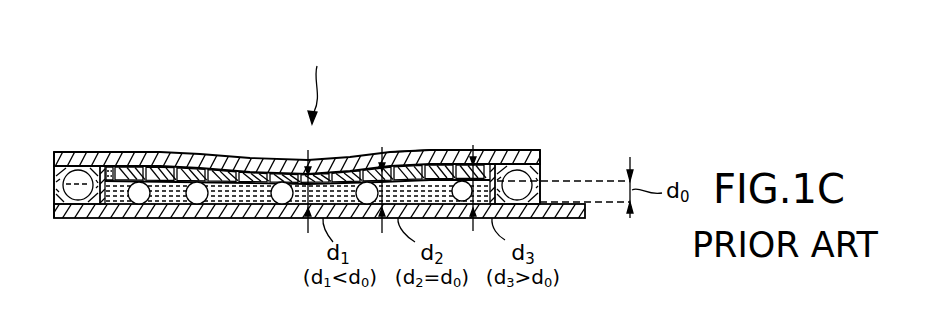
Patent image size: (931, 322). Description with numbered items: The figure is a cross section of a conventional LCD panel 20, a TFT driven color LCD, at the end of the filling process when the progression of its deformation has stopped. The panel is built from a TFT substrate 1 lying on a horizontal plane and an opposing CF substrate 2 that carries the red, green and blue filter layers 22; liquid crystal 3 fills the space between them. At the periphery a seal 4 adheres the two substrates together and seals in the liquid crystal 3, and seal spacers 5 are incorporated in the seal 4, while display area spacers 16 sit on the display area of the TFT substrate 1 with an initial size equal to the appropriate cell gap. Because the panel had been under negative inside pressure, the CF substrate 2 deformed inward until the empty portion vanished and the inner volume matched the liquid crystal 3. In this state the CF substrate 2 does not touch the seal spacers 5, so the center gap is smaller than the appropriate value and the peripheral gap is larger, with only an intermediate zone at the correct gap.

The TFT substrate 1 is at (92, 218).
The CF substrate 2 is at (349, 158).
The liquid crystal 3 is at (247, 183).
The seal 4 is at (67, 152).
The seal spacers 5 is at (95, 152).
The display area spacers 16 is at (197, 196).
The LCD panel 20 is at (318, 83).
The filter layers 22 is at (413, 163).